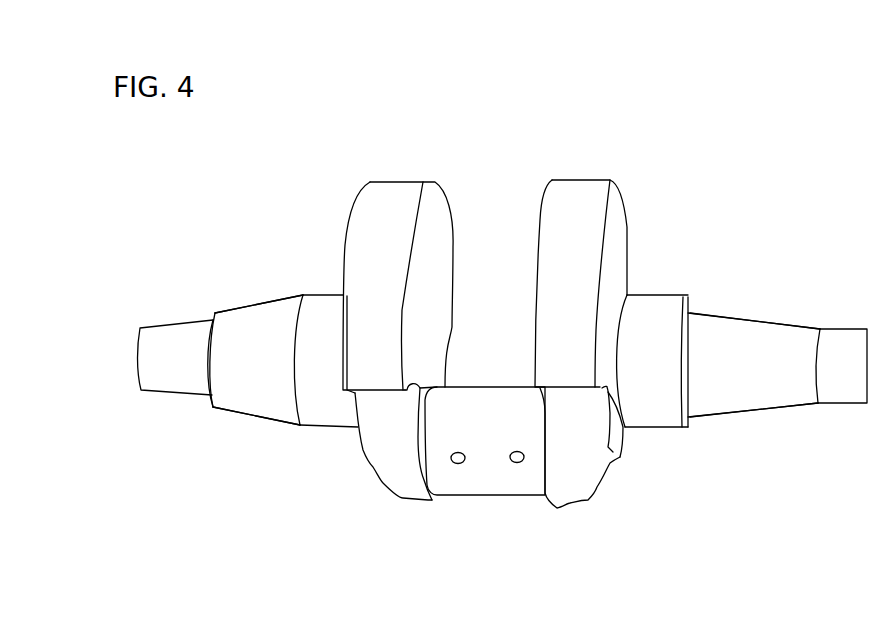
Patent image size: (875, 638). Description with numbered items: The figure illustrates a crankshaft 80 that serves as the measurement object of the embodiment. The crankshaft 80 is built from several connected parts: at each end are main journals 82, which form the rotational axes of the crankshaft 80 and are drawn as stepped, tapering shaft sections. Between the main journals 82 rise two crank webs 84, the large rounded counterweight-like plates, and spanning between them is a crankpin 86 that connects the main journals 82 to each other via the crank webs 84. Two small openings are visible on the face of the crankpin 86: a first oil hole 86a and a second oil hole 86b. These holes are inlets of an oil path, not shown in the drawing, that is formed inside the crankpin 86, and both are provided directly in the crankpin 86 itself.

The crankshaft 80 is at (752, 145).
The main journal 82 is at (258, 403).
The crank web 84 is at (392, 192).
The crankpin 86 is at (477, 403).
The first oil hole 86a is at (458, 464).
The second oil hole 86b is at (517, 463).